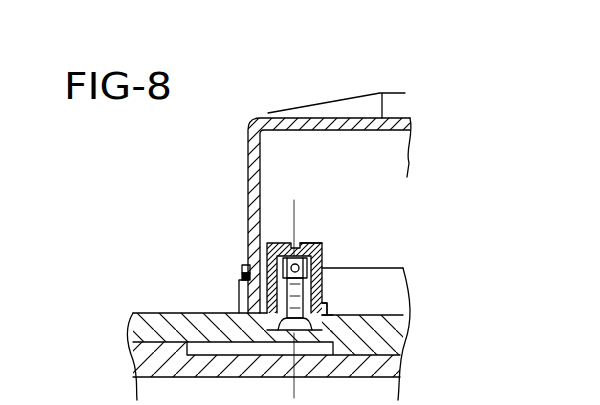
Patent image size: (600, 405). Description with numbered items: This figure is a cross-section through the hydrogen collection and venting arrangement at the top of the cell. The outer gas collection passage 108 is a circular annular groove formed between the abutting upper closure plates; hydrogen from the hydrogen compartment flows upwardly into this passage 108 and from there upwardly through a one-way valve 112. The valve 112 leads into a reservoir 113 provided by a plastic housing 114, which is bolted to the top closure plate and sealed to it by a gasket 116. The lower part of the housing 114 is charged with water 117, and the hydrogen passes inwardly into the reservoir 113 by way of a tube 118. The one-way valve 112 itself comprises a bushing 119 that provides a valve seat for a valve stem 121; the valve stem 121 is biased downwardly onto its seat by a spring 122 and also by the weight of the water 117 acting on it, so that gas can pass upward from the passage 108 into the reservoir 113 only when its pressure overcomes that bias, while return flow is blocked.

The outer gas collection passage 108 is at (213, 332).
The one-way valve 112 is at (326, 246).
The reservoir 113 is at (323, 163).
The plastic housing 114 is at (247, 146).
The gasket 116 is at (243, 271).
The water 117 is at (395, 288).
The tube 118 is at (310, 243).
The bushing 119 is at (278, 318).
The valve stem 121 is at (318, 306).
The spring 122 is at (298, 268).